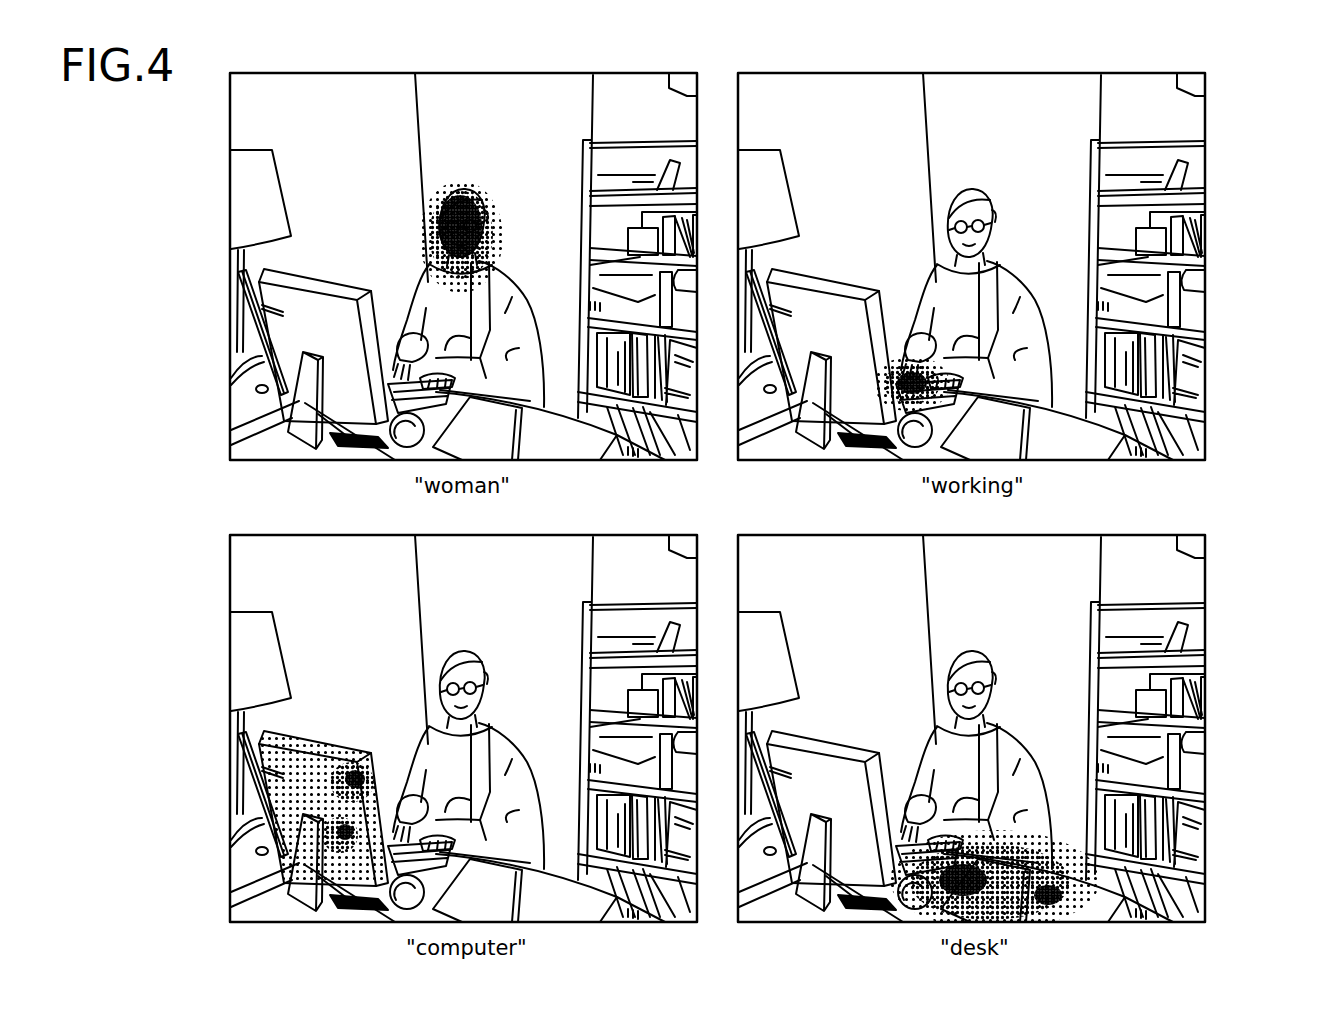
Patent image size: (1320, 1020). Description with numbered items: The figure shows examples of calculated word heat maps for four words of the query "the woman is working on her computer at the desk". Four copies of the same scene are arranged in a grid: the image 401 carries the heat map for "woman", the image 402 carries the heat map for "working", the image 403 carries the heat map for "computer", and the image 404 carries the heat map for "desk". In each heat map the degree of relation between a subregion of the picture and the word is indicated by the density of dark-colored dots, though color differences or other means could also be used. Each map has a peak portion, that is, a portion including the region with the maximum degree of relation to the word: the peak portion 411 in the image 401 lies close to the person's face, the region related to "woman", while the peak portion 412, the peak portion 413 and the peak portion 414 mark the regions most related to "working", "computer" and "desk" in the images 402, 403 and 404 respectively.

The image 401 is at (617, 50).
The image 402 is at (1125, 50).
The image 403 is at (617, 512).
The image 404 is at (1125, 512).
The peak portion 411 is at (465, 257).
The peak portion 412 is at (908, 387).
The peak portion 413 is at (358, 780).
The peak portion 414 is at (968, 856).